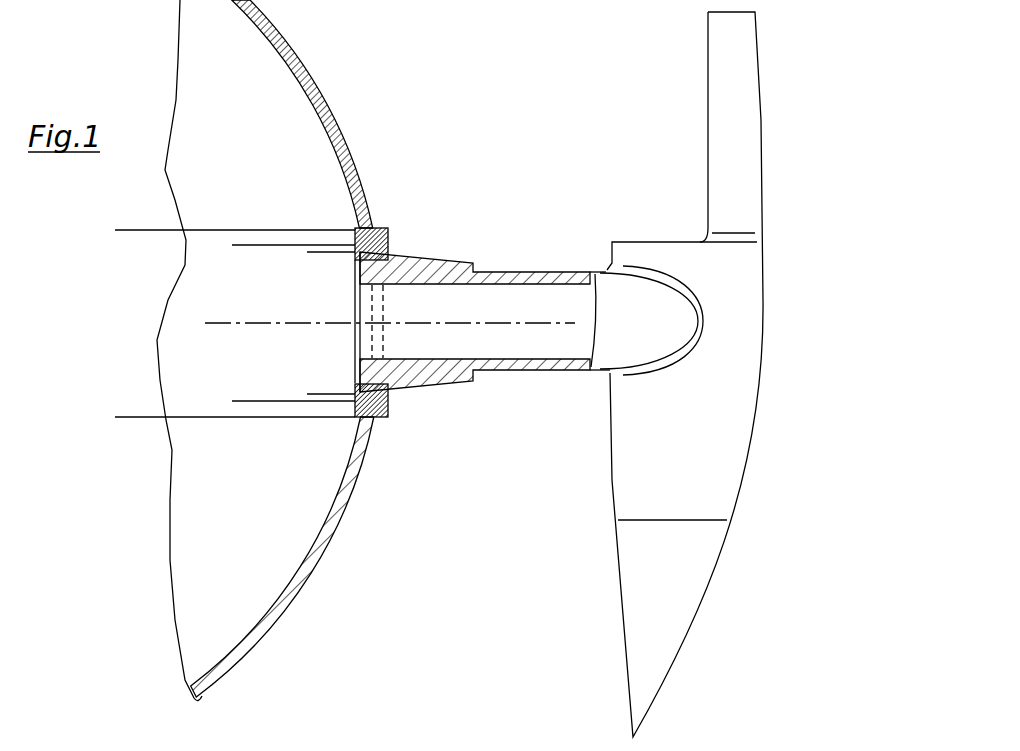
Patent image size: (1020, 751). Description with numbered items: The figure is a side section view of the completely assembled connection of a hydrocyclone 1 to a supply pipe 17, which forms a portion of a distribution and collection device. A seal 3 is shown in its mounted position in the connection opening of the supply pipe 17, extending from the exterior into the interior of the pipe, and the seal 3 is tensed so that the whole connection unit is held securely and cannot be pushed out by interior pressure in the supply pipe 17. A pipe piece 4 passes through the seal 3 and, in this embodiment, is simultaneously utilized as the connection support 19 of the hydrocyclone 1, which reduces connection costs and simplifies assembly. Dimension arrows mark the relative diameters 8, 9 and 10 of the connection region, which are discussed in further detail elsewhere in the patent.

The hydrocyclone 1 is at (616, 556).
The seal 3 is at (383, 228).
The pipe piece 4 is at (402, 265).
The diameter 8 is at (143, 230).
The diameter 9 is at (237, 401).
The diameter 10 is at (321, 394).
The supply pipe 17 is at (320, 97).
The connection support 19 is at (619, 317).